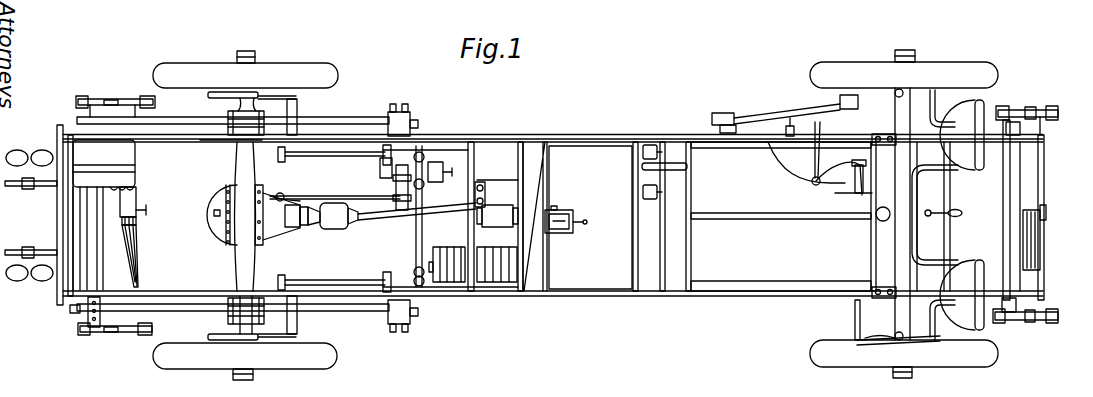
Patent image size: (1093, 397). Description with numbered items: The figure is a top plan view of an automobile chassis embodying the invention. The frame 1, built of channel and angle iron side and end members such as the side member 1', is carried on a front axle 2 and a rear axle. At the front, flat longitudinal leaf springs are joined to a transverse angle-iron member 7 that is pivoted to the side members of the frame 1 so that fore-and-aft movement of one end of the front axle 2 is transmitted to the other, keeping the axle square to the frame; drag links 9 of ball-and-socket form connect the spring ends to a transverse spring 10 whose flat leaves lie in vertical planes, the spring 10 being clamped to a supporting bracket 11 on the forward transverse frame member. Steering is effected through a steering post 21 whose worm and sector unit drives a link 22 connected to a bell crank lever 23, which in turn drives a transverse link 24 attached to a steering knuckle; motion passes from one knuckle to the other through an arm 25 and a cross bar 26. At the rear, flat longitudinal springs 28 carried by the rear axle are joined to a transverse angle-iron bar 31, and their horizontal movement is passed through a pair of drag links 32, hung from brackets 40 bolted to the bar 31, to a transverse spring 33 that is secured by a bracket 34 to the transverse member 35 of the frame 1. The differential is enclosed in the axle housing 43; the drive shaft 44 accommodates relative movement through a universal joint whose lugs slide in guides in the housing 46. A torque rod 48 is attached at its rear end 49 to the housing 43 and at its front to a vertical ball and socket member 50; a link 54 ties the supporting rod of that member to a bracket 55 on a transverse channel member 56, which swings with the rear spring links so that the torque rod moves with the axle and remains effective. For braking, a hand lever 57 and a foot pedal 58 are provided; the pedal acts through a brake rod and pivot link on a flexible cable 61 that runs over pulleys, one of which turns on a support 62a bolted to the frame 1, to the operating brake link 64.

The frame 1 is at (557, 215).
The frame cross member 1' is at (231, 153).
The front axle 2 is at (896, 305).
The transverse member 7 is at (1003, 225).
The drag links 9 is at (1030, 320).
The transverse spring 10 is at (1038, 258).
The supporting bracket 11 is at (1045, 205).
The steering post 21 is at (930, 92).
The link 22 is at (762, 117).
The bell crank lever 23 is at (838, 160).
The transverse link 24 is at (855, 192).
The arm 25 is at (925, 345).
The cross bar 26 is at (950, 210).
The longitudinal springs 28 is at (364, 312).
The transverse bar 31 is at (88, 240).
The drag links 32 is at (116, 99).
The transverse spring 33 is at (138, 232).
The bracket 34 is at (146, 212).
The transverse member 35 is at (136, 196).
The brackets 40 is at (88, 318).
The axle housing 43 is at (246, 250).
The drive shaft 44 is at (372, 222).
The housing 46 is at (498, 227).
The torque rod 48 is at (366, 198).
The rear end 49 is at (290, 189).
The ball and socket member 50 is at (492, 192).
The link 54 is at (448, 208).
The bracket 55 is at (398, 208).
The channel member 56 is at (400, 254).
The hand lever 57 is at (560, 204).
The foot pedal 58 is at (642, 193).
The flexible tension member 61 is at (338, 164).
The support 62a is at (382, 153).
The operating brake link 64 is at (228, 127).